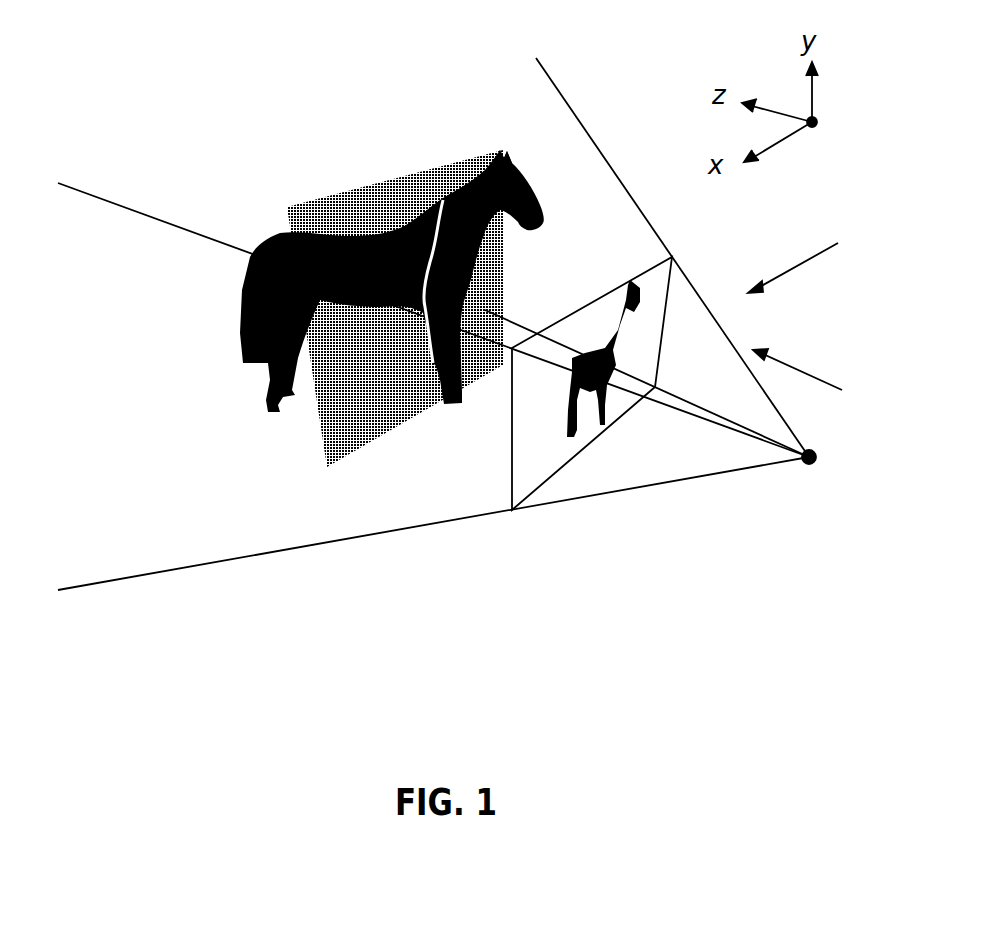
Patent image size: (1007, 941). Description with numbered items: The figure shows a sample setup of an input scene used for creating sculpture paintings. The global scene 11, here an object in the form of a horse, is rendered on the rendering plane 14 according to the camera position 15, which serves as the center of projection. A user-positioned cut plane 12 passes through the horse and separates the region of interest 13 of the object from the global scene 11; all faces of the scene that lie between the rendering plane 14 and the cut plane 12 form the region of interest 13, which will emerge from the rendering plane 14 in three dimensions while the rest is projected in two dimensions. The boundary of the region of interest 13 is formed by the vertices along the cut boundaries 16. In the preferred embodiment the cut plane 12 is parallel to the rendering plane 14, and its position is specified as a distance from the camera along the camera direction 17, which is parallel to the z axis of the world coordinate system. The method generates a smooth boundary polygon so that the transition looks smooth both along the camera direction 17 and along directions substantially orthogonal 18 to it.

The global scene 11 is at (222, 342).
The cut plane 12 is at (393, 172).
The region of interest 13 is at (527, 175).
The rendering plane 14 is at (548, 488).
The camera position 15 is at (802, 480).
The cut boundaries 16 is at (433, 363).
The camera direction 17 is at (797, 346).
The directions substantially orthogonal to the camera direction 18 is at (793, 245).